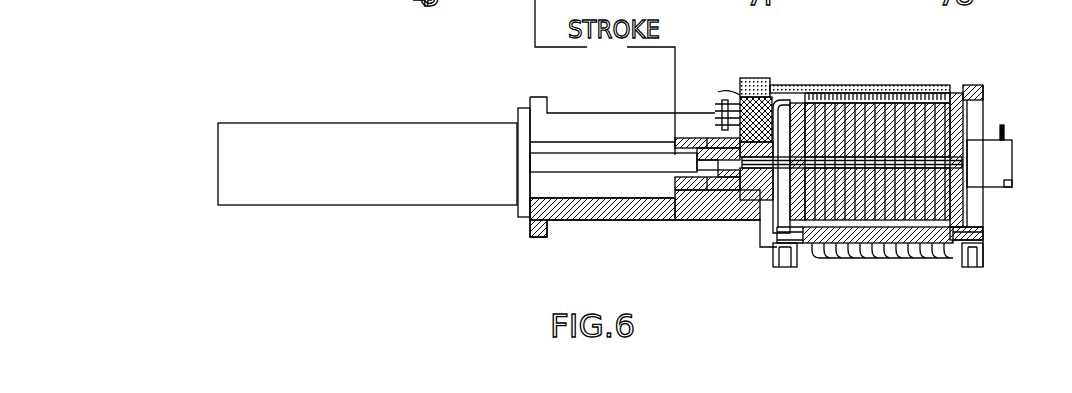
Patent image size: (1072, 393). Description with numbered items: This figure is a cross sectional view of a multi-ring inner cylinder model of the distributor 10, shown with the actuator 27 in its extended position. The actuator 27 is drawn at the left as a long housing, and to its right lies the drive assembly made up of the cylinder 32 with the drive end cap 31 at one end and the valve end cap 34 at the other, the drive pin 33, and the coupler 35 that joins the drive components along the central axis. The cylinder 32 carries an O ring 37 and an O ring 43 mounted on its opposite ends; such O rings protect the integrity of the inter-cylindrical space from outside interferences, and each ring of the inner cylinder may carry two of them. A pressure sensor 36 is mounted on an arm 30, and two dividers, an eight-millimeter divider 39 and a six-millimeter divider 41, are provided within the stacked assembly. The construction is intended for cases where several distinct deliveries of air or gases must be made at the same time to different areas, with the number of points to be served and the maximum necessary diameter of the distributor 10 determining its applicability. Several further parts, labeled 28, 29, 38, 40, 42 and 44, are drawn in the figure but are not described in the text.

The distributor 10 is at (500, 248).
The actuator 27 is at (278, 206).
The housing body 28 is at (585, 221).
The bushing 29 is at (713, 190).
The arm 30 is at (745, 188).
The drive end cap 31 is at (785, 265).
The cylinder 32 is at (812, 245).
The drive pin 33 is at (878, 200).
The valve end cap 34 is at (975, 262).
The coupler 35 is at (678, 140).
The pressure sensor 36 is at (720, 100).
The O ring 37 is at (788, 84).
The cover 38 is at (812, 88).
The 8 mm divider 39 is at (818, 97).
The lamination stack 40 is at (858, 100).
The 6 mm divider 41 is at (897, 103).
The end plate 42 is at (947, 97).
The O ring 43 is at (965, 85).
The plunger 44 is at (1004, 138).